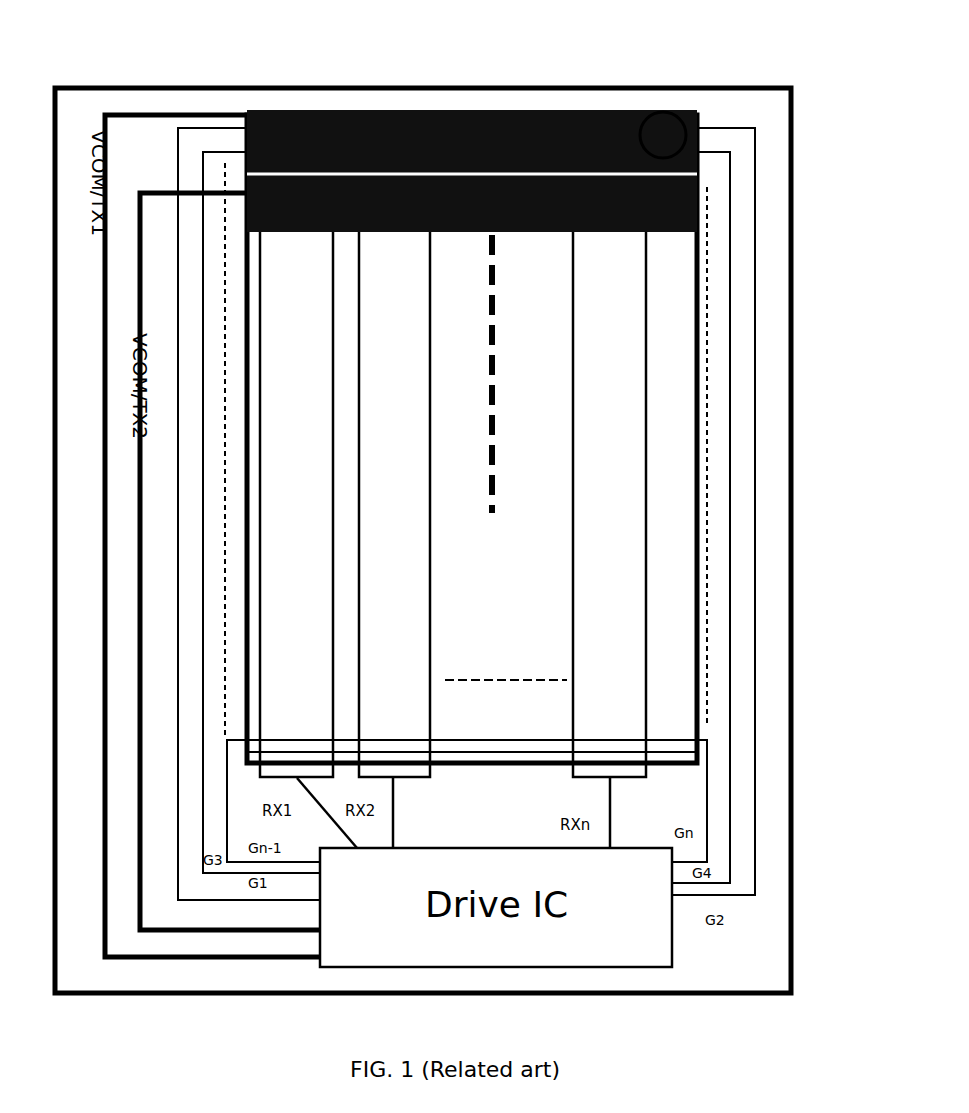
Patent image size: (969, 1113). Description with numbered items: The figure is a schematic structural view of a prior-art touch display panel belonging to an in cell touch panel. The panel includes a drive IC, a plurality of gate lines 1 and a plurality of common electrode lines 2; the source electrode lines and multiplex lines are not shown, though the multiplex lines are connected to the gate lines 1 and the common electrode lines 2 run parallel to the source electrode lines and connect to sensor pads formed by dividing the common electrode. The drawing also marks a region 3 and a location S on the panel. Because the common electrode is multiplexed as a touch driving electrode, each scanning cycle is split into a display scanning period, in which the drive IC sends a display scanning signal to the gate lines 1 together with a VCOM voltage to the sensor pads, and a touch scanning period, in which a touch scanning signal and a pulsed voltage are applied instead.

The gate lines 1 is at (480, 110).
The common electrode lines 2 is at (700, 208).
The display region 3 is at (612, 548).
The touch sensing unit S is at (700, 128).